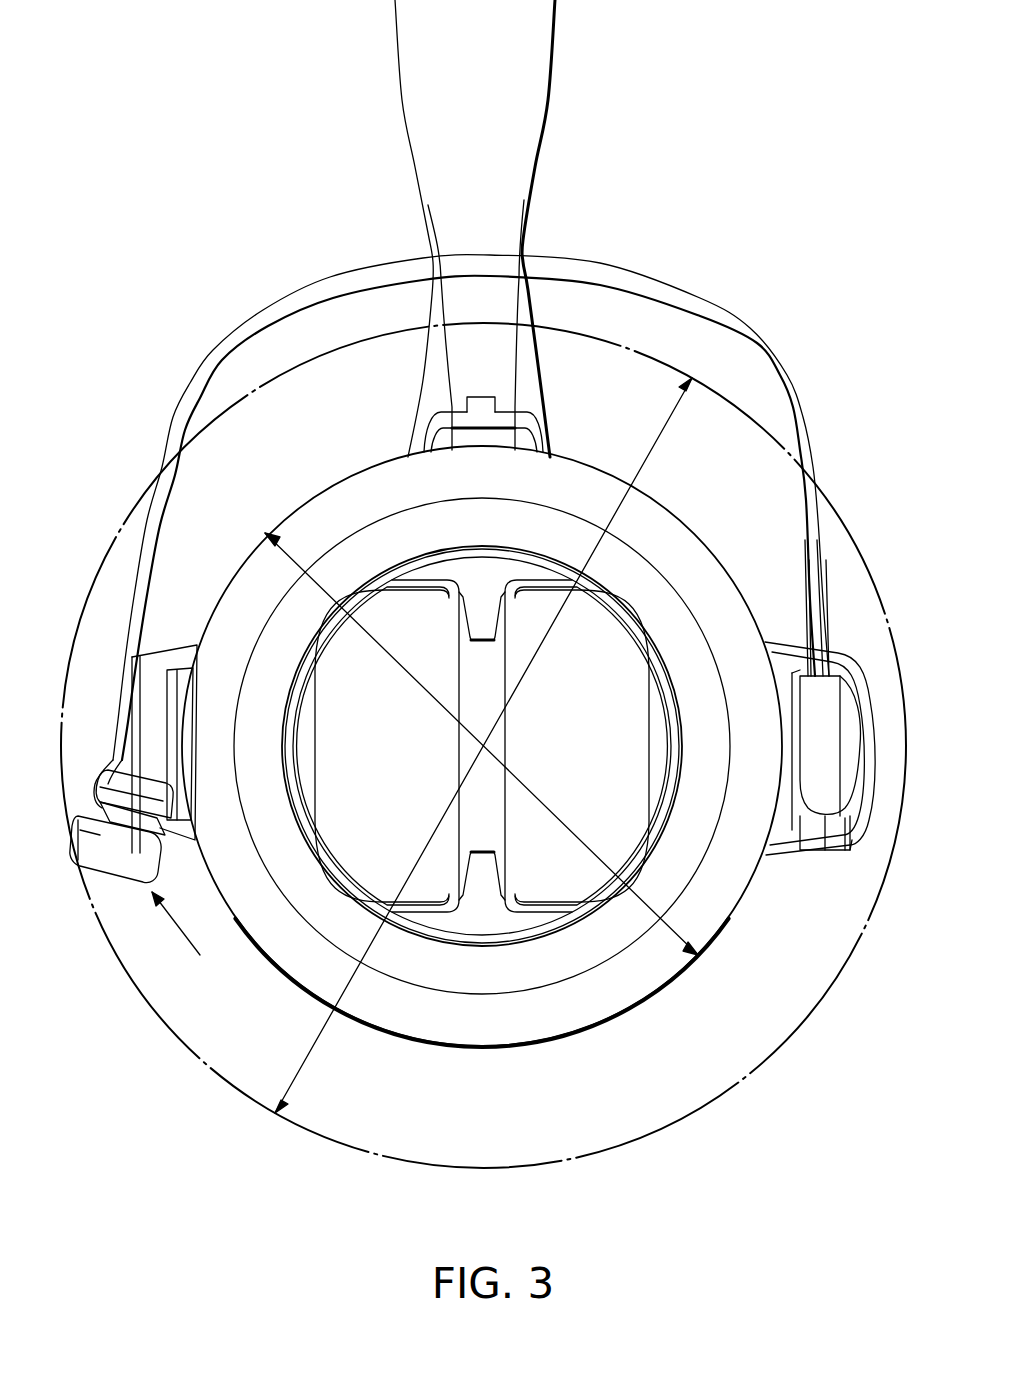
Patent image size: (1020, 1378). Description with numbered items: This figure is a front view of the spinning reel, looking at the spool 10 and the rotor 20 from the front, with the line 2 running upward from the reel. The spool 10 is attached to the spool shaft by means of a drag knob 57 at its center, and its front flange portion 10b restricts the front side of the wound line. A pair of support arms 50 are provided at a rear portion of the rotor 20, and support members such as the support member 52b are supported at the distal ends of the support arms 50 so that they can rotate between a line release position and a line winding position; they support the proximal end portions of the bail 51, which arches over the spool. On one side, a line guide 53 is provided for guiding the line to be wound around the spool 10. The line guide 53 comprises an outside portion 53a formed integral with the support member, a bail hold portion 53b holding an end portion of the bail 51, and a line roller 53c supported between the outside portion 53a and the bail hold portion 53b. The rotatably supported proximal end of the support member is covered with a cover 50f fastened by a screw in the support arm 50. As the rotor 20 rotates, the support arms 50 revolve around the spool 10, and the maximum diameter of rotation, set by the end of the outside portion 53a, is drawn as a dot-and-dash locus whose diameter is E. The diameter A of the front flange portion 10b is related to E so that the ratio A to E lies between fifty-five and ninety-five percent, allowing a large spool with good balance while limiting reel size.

The strap 2 is at (540, 110).
The bail 51 is at (738, 312).
The spool 10 is at (688, 868).
The front flange portion 10b is at (640, 987).
The drag knob 57 is at (430, 892).
The rotor 20 is at (790, 652).
The support member 52b is at (848, 715).
The support arm 50 is at (160, 662).
The cover 50f is at (115, 701).
The line guide 53 is at (187, 938).
The outside portion 53a is at (140, 887).
The bail hold portion 53b is at (180, 870).
The line roller 53c is at (100, 873).
The maximum diameter of rotation E is at (483, 745).
The diameter of the front flange portion A is at (481, 744).